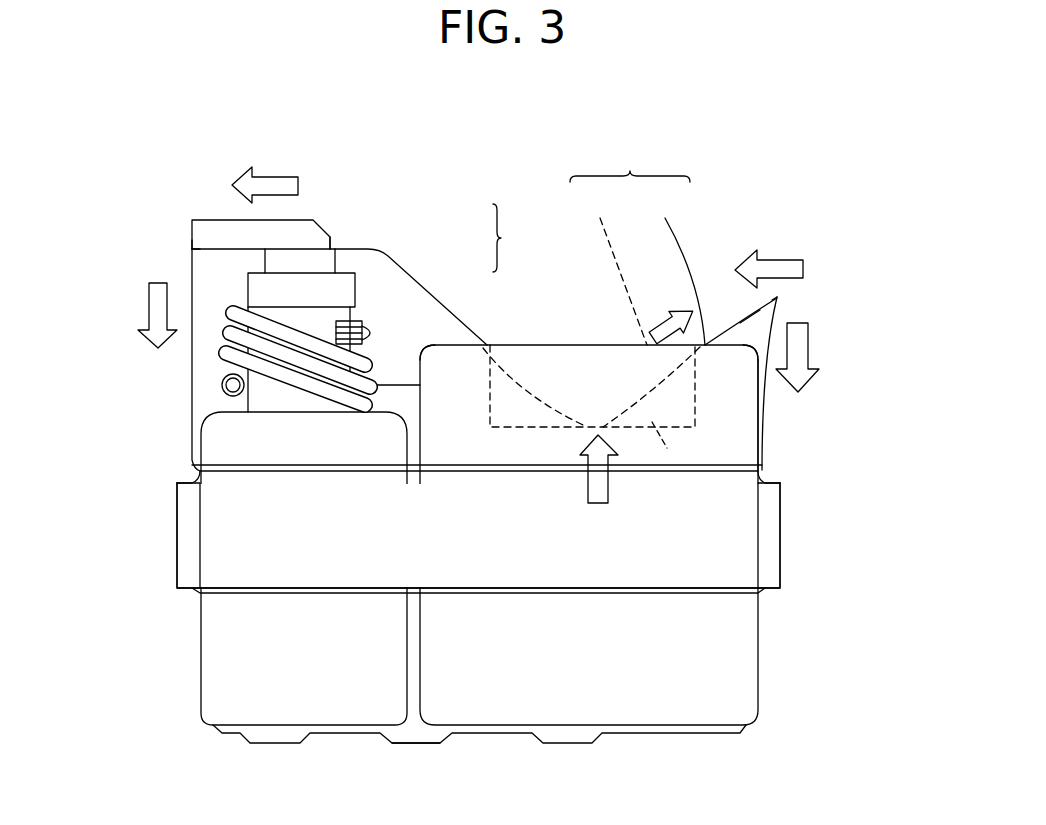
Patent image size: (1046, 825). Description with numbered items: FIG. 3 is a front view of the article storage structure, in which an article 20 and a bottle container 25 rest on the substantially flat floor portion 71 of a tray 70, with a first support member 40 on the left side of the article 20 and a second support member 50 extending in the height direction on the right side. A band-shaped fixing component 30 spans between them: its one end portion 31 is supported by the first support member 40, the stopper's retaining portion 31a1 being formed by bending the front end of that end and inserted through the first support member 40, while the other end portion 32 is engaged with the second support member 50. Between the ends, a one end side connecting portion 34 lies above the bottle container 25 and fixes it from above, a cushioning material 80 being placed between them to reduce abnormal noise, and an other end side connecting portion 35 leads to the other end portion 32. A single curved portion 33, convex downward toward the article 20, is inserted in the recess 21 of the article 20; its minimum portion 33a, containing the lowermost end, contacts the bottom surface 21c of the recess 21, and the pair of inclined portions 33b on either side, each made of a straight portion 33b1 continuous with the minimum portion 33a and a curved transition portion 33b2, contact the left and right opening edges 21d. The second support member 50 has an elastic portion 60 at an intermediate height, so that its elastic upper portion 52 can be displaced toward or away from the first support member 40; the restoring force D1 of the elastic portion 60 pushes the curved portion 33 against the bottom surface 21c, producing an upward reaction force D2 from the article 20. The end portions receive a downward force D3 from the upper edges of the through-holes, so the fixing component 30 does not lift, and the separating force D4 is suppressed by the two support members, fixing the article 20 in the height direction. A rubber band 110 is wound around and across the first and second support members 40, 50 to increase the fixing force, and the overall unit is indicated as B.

The article 20 is at (523, 705).
The recess 21 is at (523, 368).
The bottom surface 21c is at (685, 444).
The opening edges 21d is at (440, 348).
The bottle container 25 is at (315, 705).
The fixing component 30 is at (365, 237).
The one end portion 31 is at (190, 248).
The retaining portion 31a1 is at (190, 248).
The other end portion 32 is at (768, 316).
The curved portion 33 is at (580, 423).
The minimum portion 33a is at (595, 427).
The inclined portions 33b is at (591, 206).
The straight portion 33b1 is at (447, 305).
The transition portion 33b2 is at (386, 250).
The one end side connecting portion 34 is at (335, 247).
The other end side connecting portion 35 is at (730, 330).
The first support member 40 is at (193, 345).
The second support member 50 is at (760, 445).
The elastic upper portion 52 is at (778, 298).
The elastic portion 60 is at (760, 373).
The tray 70 is at (400, 745).
The floor portion 71 is at (411, 745).
The cushioning material 80 is at (279, 262).
The rubber band 110 is at (255, 593).
The blower unit B is at (850, 320).
The restoring force D1 is at (775, 267).
The reaction force D2 is at (608, 493).
The downward force D3 is at (150, 302).
The force D4 is at (272, 186).